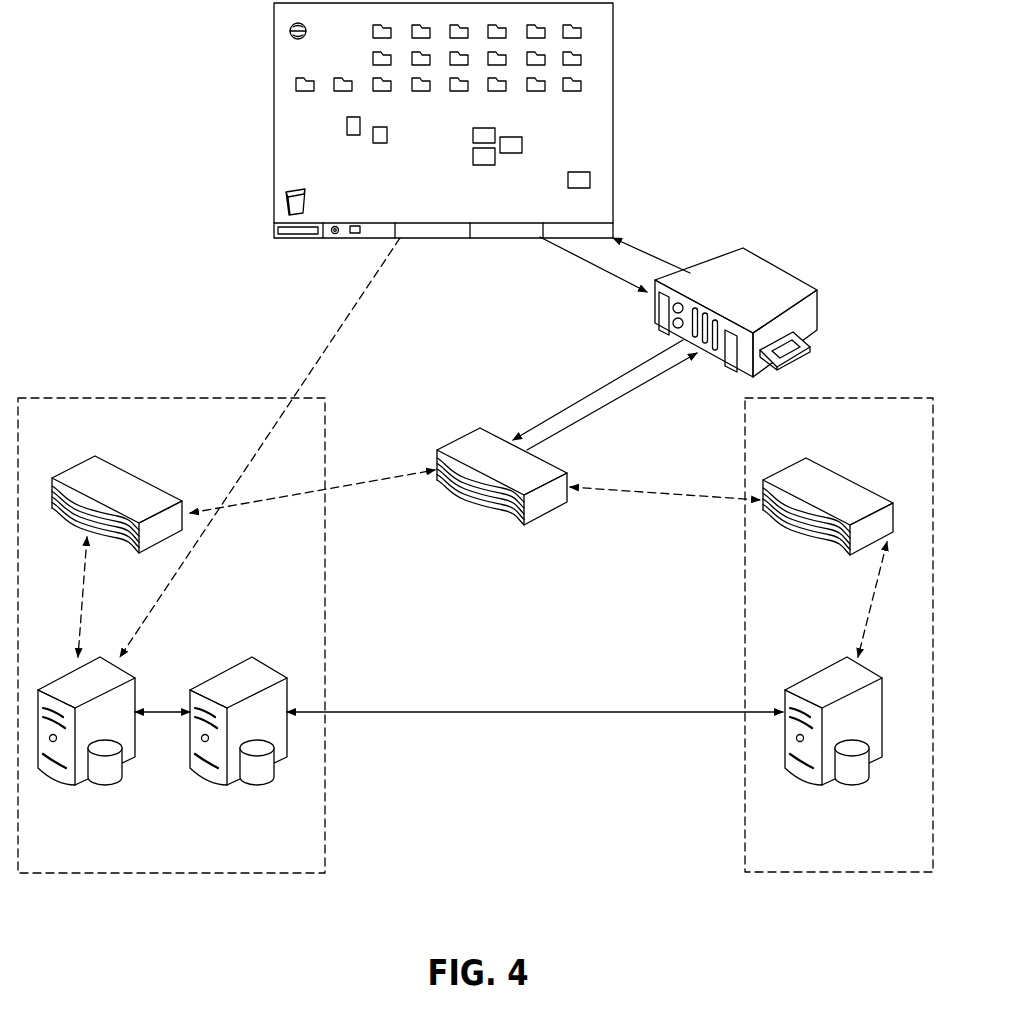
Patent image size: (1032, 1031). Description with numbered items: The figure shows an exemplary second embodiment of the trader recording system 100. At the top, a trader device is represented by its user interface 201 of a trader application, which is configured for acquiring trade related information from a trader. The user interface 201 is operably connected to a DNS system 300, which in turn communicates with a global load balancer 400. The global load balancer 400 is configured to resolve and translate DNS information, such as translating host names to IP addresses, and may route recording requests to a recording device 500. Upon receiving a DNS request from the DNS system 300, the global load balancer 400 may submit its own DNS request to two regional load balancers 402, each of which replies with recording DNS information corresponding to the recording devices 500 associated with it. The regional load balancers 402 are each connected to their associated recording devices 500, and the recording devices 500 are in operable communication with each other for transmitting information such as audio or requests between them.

The trader recording system 100 is at (689, 147).
The user interface 201 is at (285, 130).
The DNS system 300 is at (762, 263).
The global load balancer 400 is at (465, 447).
The regional load balancer 402 is at (120, 483).
The recording device 500 is at (235, 728).